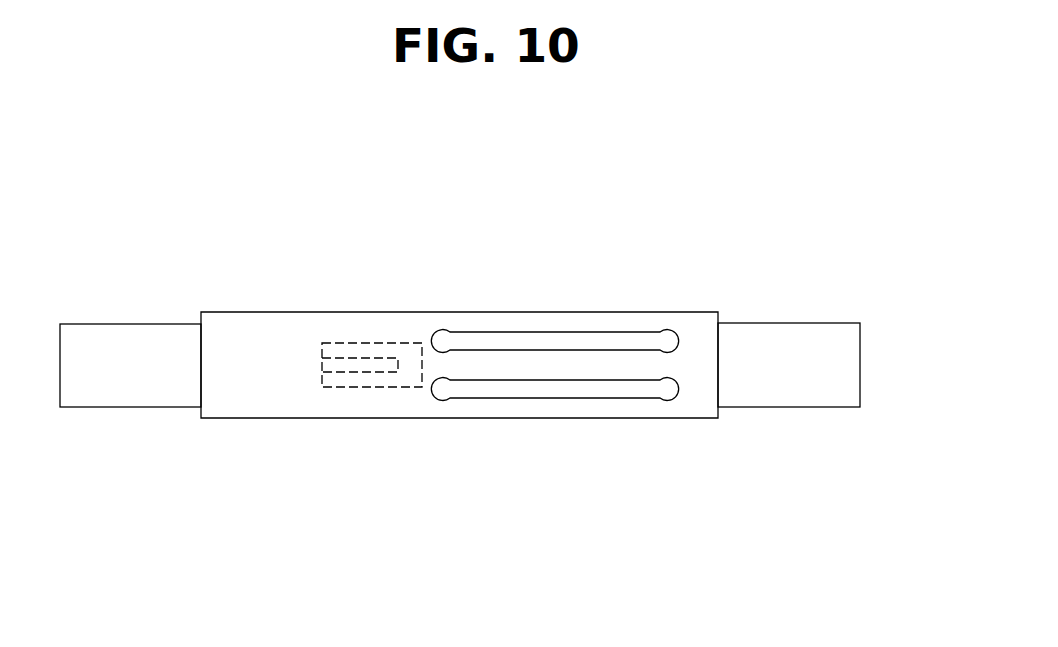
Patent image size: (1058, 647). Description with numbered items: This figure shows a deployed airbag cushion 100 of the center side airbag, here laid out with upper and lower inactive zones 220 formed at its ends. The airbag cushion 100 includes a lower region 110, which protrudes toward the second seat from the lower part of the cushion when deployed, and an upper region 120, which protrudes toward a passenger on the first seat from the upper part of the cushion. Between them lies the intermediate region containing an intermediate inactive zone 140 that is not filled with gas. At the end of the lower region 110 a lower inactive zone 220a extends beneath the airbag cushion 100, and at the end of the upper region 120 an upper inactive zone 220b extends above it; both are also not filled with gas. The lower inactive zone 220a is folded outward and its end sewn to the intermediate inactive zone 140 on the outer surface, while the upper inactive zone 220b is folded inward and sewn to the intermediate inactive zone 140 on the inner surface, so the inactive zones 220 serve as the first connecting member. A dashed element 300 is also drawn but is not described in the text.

The airbag cushion 100 is at (469, 354).
The lower region 110 is at (282, 387).
The upper region 120 is at (695, 337).
The intermediate inactive zone 140 is at (545, 392).
The sensing element 300 is at (383, 367).
The upper and lower inactive zones 220 is at (474, 436).
The lower inactive zone 220a is at (123, 342).
The upper inactive zone 220b is at (790, 348).